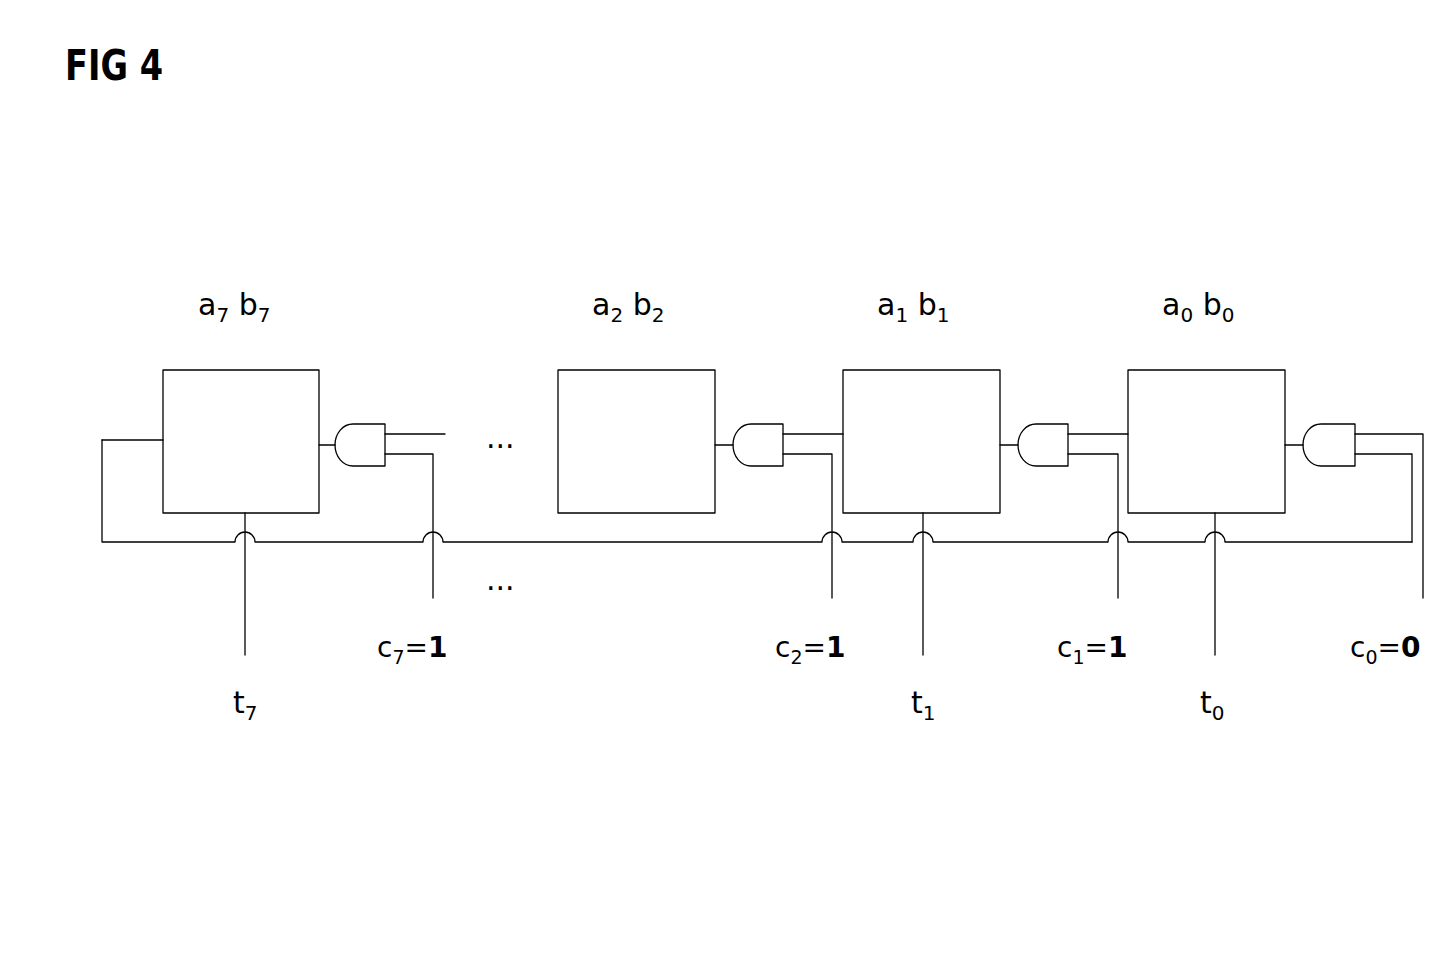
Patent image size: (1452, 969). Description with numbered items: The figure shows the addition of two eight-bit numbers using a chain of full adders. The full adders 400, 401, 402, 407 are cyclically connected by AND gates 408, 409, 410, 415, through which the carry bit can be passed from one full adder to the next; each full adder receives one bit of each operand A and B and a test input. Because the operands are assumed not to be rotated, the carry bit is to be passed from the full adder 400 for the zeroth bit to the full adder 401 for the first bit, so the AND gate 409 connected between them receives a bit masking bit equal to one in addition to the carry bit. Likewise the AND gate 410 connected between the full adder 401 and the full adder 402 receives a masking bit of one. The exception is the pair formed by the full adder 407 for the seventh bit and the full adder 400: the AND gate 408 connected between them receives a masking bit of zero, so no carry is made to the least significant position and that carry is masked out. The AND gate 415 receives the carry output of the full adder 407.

The full adder 400 is at (1275, 370).
The full adder 401 is at (990, 370).
The full adder 402 is at (708, 370).
The full adder 407 is at (312, 370).
The AND gate 408 is at (1355, 425).
The AND gate 409 is at (1052, 425).
The AND gate 410 is at (766, 425).
The AND gate 415 is at (373, 425).